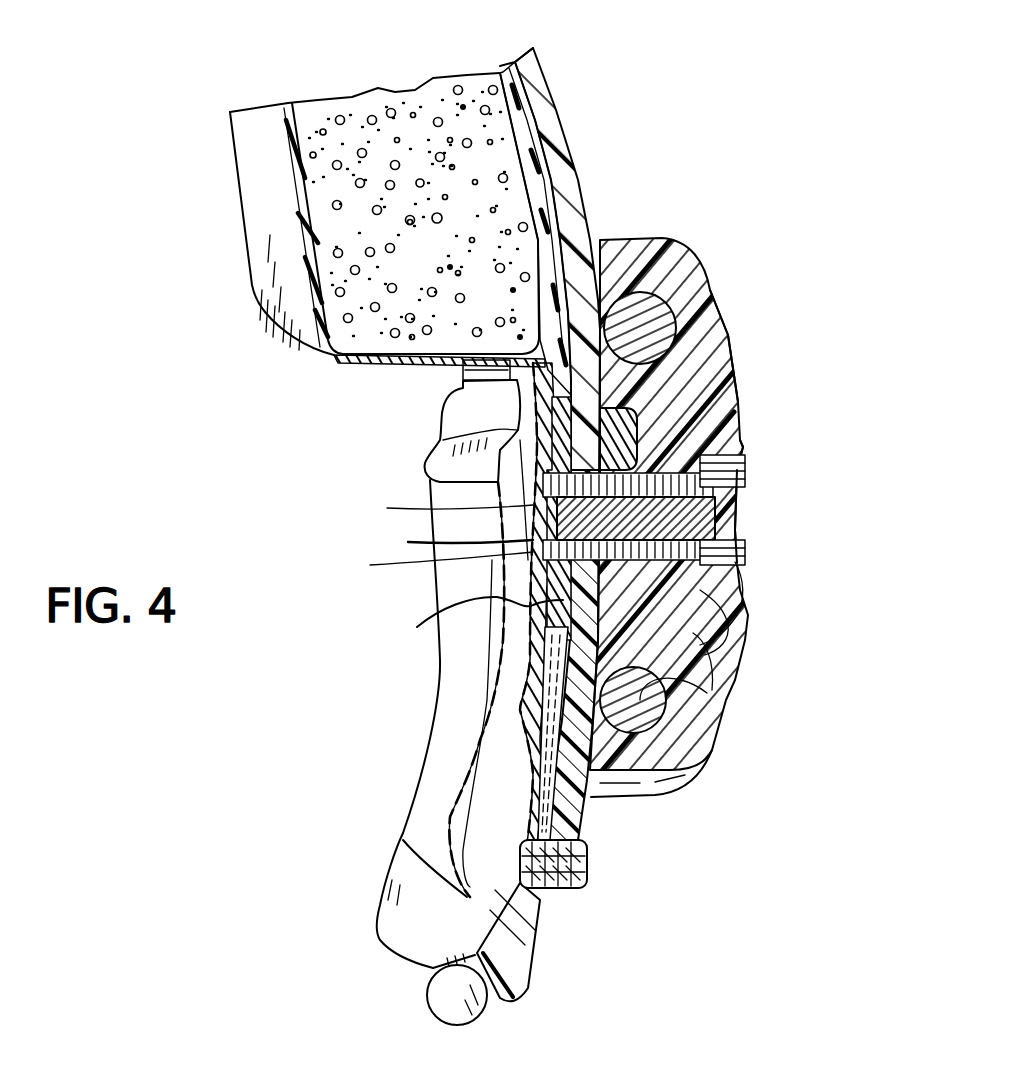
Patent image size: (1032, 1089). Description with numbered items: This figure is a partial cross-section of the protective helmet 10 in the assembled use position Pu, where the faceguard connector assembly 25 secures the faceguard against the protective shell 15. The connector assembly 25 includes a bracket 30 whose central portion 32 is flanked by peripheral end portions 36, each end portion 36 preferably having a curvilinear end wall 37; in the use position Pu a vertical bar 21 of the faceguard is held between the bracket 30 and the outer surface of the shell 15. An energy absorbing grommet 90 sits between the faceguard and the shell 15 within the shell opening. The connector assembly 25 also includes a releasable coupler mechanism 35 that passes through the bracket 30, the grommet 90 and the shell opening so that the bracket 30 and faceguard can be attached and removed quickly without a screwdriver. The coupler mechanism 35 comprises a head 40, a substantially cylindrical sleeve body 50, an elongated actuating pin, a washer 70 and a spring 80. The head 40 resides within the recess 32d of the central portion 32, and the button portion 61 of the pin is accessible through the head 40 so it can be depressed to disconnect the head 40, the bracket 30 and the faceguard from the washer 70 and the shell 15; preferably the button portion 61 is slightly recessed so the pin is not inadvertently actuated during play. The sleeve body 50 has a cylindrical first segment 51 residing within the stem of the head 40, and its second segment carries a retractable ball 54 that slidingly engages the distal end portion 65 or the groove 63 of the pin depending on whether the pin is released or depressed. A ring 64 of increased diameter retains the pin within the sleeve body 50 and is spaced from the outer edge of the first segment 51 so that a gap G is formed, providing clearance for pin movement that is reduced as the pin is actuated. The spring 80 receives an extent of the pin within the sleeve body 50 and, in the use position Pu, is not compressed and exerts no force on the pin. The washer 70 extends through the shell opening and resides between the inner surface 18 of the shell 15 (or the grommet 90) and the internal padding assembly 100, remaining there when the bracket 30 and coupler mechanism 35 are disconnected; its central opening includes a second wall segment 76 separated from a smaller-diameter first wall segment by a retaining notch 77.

The protective helmet 10 is at (720, 90).
The use position Pu is at (812, 160).
The curvilinear end wall 37 is at (672, 240).
The peripheral end portion 36 is at (707, 258).
The vertical bar 21 is at (681, 316).
The bracket 30 is at (795, 336).
The central portion 32 is at (748, 390).
The recess 32d is at (747, 470).
The ring 64 is at (747, 443).
The head 40 is at (733, 487).
The releasable coupler mechanism 35 is at (820, 504).
The button portion 61 is at (733, 517).
The faceguard connector assembly 25 is at (783, 552).
The gap G is at (733, 608).
The spring 80 is at (737, 610).
The groove 63 is at (693, 633).
The cylindrical first segment 51 is at (707, 693).
The washer 70 is at (640, 442).
The internal padding assembly 100 is at (423, 402).
The sleeve body 50 is at (545, 480).
The retractable ball 54 is at (444, 512).
The distal end portion 65 is at (533, 522).
The second wall segment 76 is at (459, 549).
The notch 77 is at (437, 568).
The grommet 90 is at (469, 624).
The inner surface 18 is at (450, 927).
The protective shell 15 is at (520, 940).